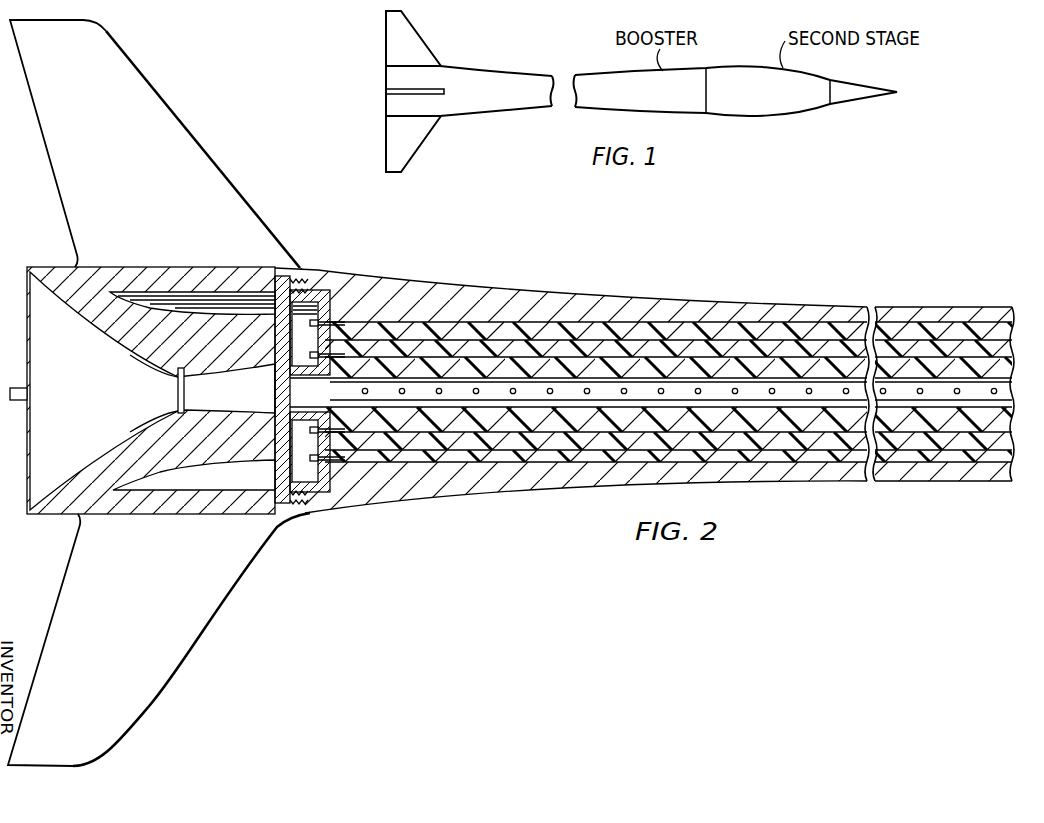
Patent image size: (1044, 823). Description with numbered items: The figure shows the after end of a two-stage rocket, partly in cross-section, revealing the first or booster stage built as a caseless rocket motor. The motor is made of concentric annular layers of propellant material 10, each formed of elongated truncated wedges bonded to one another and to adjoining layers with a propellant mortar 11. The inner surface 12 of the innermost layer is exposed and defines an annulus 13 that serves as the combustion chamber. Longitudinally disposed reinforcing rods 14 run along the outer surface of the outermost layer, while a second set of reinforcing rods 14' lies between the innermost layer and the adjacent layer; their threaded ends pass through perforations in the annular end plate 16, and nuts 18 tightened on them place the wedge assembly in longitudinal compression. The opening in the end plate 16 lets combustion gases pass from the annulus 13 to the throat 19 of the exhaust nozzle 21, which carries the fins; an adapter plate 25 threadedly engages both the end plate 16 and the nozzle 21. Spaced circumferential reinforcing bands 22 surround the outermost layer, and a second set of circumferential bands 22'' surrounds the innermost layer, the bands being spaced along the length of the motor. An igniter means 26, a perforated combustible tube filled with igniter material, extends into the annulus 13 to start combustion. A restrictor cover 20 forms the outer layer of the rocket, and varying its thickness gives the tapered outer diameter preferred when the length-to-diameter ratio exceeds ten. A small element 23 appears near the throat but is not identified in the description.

The propellant material 10 is at (790, 360).
The propellant mortar 11 is at (710, 332).
The inner surface 12 is at (277, 398).
The annulus 13 is at (332, 392).
The reinforcing rods 14 is at (668, 304).
The reinforcing rods 14' is at (668, 312).
The end plate 16 is at (315, 289).
The nuts 18 is at (292, 465).
The throat of exhaust nozzle 19 is at (214, 405).
The restrictor cover 20 is at (378, 287).
The exhaust nozzle 21 is at (68, 480).
The circumferential reinforcing bands 22 is at (668, 460).
The circumferential reinforcing bands 22'' is at (668, 473).
The throat pin 23 is at (177, 394).
The adapter plate 25 is at (272, 268).
The igniter means 26 is at (980, 395).